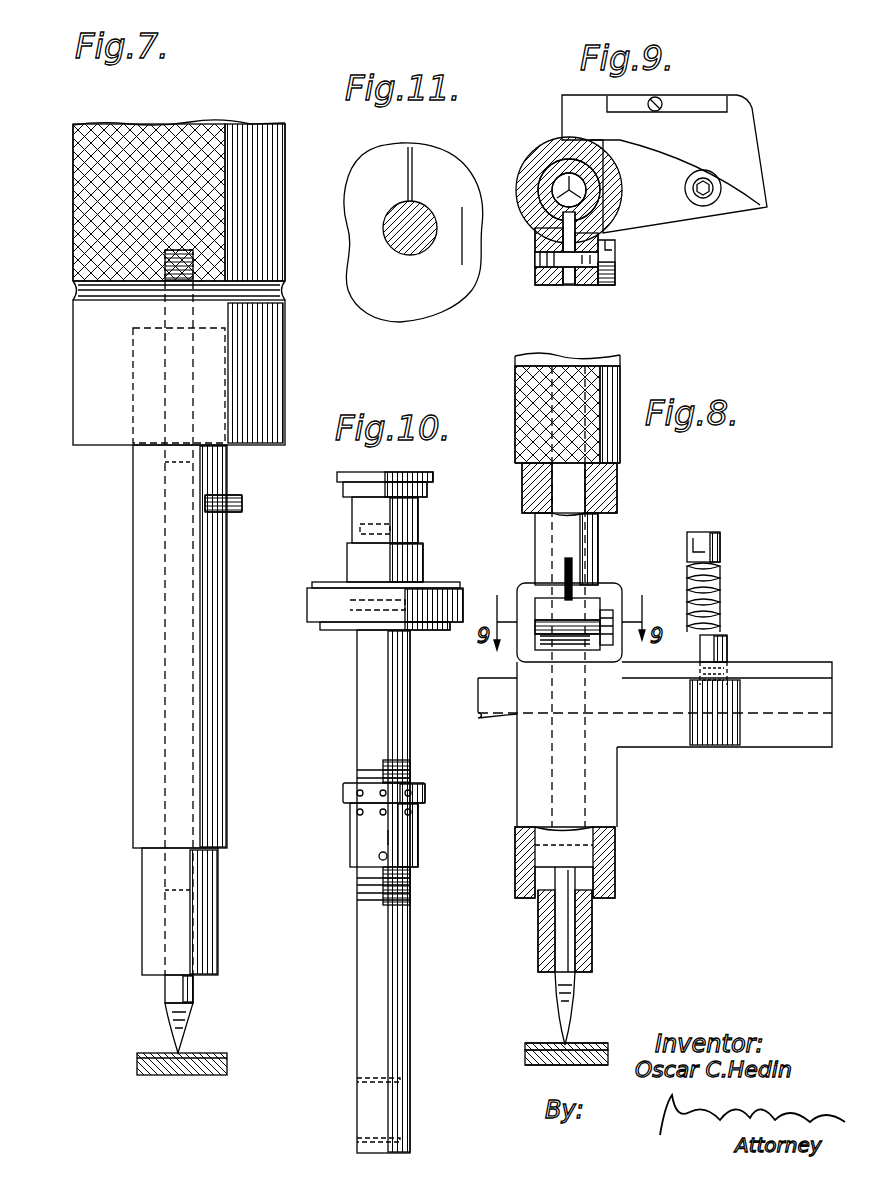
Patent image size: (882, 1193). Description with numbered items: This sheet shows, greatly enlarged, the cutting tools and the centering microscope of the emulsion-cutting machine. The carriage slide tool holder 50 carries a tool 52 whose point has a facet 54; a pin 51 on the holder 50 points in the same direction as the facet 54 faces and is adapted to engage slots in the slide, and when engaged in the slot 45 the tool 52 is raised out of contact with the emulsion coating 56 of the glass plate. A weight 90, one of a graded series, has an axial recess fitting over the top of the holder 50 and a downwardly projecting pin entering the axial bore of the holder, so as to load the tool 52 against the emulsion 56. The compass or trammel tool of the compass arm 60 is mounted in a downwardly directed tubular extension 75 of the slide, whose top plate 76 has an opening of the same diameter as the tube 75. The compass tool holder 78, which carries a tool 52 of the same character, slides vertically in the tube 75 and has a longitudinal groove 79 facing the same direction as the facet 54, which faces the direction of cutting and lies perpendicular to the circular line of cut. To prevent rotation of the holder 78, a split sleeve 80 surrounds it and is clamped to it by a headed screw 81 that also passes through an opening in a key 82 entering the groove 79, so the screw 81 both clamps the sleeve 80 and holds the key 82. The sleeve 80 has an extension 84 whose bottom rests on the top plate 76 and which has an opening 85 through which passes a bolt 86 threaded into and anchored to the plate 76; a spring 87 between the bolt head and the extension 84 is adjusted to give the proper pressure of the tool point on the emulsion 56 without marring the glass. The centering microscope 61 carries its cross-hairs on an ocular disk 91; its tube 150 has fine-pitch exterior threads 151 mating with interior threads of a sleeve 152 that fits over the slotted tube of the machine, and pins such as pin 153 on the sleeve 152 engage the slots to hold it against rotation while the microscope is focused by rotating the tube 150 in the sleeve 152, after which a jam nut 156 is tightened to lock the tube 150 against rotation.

In FIG. 8, the slot 45 is at (525, 1062).
In FIG. 7, the tool holder 50 is at (228, 710).
In FIG. 7, the pin 51 is at (232, 500).
In FIG. 7, the tool 52 is at (193, 986).
In FIG. 8, the tool 52 is at (580, 940).
In FIG. 7, the facet 54 is at (190, 1013).
In FIG. 11, the facet 54 is at (405, 242).
In FIG. 9, the facet 54 is at (540, 213).
In FIG. 8, the facet 54 is at (576, 1003).
In FIG. 8, the emulsion coating 56 is at (590, 1045).
In FIG. 8, the compass arm 60 is at (498, 722).
In FIG. 10, the microscope 61 is at (385, 986).
In FIG. 8, the tubular extension 75 is at (617, 797).
In FIG. 9, the top plate 76 is at (755, 210).
In FIG. 8, the top plate 76 is at (790, 665).
In FIG. 9, the tool holder 78 is at (540, 162).
In FIG. 8, the tool holder 78 is at (598, 540).
In FIG. 9, the longitudinal groove 79 is at (600, 205).
In FIG. 8, the longitudinal groove 79 is at (575, 575).
In FIG. 9, the split sleeve 80 is at (522, 188).
In FIG. 8, the split sleeve 80 is at (517, 652).
In FIG. 9, the headed screw 81 is at (548, 285).
In FIG. 8, the headed screw 81 is at (610, 642).
In FIG. 9, the key 82 is at (540, 242).
In FIG. 8, the key 82 is at (563, 608).
In FIG. 9, the extension 84 is at (680, 210).
In FIG. 8, the extension 84 is at (728, 648).
In FIG. 8, the opening 85 is at (690, 668).
In FIG. 8, the bolt 86 is at (720, 572).
In FIG. 8, the spring 87 is at (720, 603).
In FIG. 7, the weight 90 is at (285, 166).
In FIG. 10, the ocular disk 91 is at (405, 600).
In FIG. 10, the tube 150 is at (395, 776).
In FIG. 10, the threads 151 is at (360, 771).
In FIG. 10, the sleeve 152 is at (405, 832).
In FIG. 10, the pin 153 is at (378, 856).
In FIG. 10, the jam nut 156 is at (425, 793).